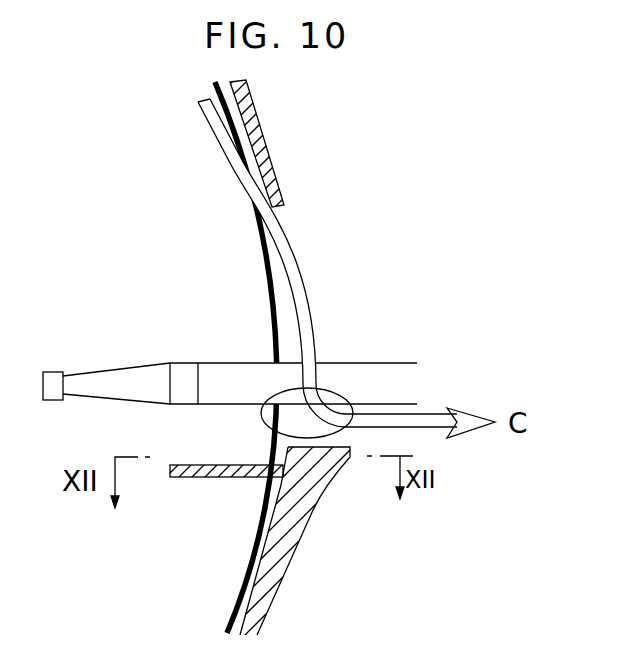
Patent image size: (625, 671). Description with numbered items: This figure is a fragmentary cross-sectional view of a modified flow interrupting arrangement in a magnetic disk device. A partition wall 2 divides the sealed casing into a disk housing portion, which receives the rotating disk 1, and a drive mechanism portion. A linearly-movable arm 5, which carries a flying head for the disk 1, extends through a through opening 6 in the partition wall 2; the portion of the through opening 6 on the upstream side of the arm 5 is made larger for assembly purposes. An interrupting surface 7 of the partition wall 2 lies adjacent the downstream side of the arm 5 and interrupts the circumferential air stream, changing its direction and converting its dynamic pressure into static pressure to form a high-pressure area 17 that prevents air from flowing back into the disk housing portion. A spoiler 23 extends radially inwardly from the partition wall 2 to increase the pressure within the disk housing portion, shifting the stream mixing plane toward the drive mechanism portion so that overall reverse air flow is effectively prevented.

The disk 1 is at (158, 158).
The partition wall 2 is at (283, 182).
The arm 5 is at (228, 373).
The through opening 6 is at (298, 245).
The interrupting surface 7 is at (350, 457).
The high-pressure area 17 is at (340, 388).
The spoiler 23 is at (237, 463).